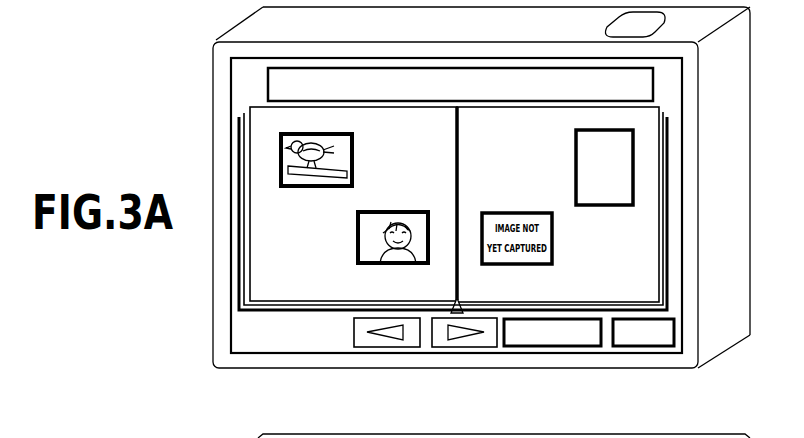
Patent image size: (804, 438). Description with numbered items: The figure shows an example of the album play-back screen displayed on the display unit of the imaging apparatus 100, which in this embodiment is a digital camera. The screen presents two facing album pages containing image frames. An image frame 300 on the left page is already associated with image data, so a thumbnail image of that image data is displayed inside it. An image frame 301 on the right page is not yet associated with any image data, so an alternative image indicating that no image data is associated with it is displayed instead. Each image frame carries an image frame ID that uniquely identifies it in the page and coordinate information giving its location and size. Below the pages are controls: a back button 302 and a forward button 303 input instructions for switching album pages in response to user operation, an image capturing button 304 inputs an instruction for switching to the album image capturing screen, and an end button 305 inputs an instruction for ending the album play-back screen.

The imaging apparatus 100 is at (266, 21).
The image frame 300 is at (353, 141).
The image frame 301 is at (574, 145).
The back button 302 is at (364, 347).
The forward button 303 is at (442, 347).
The image capturing button 304 is at (510, 347).
The end button 305 is at (620, 347).